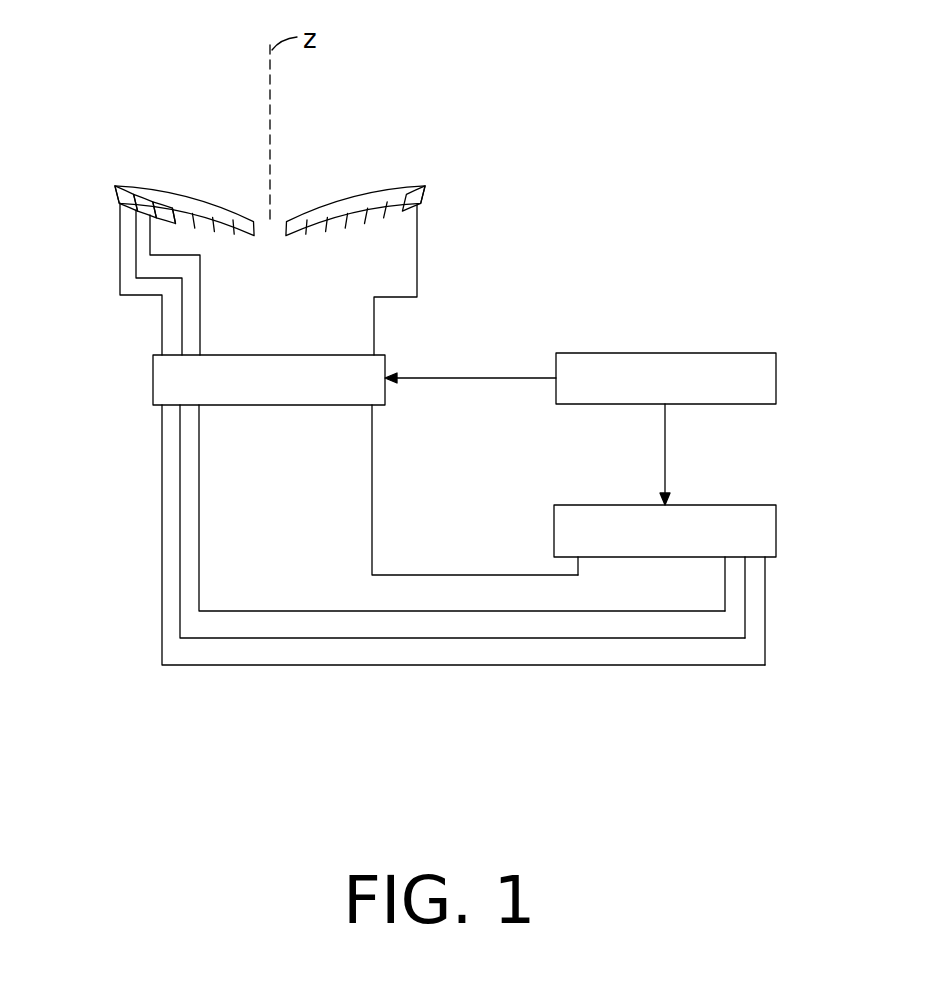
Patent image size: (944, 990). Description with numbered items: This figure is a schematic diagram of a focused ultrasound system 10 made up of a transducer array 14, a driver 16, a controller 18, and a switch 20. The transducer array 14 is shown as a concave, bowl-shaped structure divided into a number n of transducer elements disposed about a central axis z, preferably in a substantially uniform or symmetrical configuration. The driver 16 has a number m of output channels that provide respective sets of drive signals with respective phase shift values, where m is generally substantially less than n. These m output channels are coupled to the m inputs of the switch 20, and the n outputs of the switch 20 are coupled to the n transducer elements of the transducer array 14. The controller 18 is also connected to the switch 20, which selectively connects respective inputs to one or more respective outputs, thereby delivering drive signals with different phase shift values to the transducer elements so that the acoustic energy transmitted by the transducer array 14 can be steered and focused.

The focused ultrasound system 10 is at (658, 202).
The transducer array 14 is at (430, 174).
The driver 16 is at (787, 530).
The controller 18 is at (787, 382).
The switch 20 is at (143, 383).